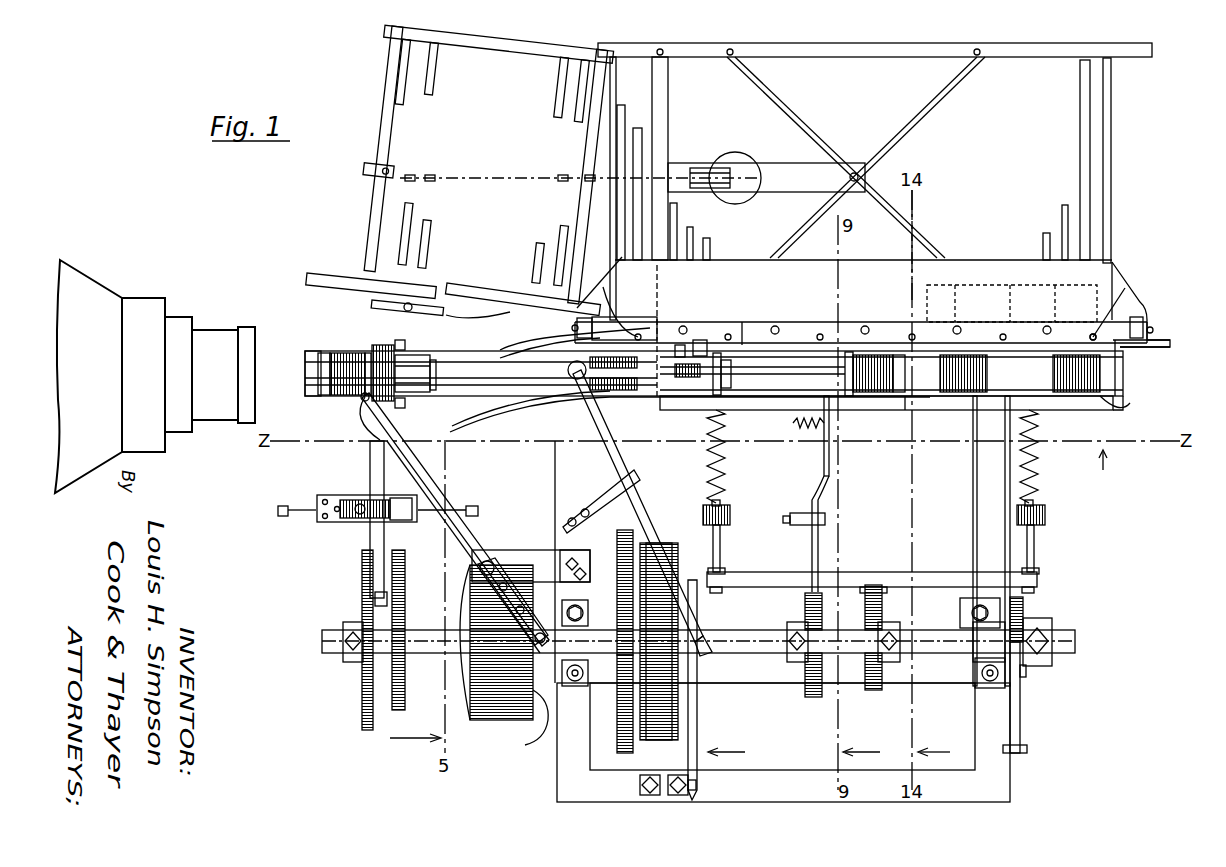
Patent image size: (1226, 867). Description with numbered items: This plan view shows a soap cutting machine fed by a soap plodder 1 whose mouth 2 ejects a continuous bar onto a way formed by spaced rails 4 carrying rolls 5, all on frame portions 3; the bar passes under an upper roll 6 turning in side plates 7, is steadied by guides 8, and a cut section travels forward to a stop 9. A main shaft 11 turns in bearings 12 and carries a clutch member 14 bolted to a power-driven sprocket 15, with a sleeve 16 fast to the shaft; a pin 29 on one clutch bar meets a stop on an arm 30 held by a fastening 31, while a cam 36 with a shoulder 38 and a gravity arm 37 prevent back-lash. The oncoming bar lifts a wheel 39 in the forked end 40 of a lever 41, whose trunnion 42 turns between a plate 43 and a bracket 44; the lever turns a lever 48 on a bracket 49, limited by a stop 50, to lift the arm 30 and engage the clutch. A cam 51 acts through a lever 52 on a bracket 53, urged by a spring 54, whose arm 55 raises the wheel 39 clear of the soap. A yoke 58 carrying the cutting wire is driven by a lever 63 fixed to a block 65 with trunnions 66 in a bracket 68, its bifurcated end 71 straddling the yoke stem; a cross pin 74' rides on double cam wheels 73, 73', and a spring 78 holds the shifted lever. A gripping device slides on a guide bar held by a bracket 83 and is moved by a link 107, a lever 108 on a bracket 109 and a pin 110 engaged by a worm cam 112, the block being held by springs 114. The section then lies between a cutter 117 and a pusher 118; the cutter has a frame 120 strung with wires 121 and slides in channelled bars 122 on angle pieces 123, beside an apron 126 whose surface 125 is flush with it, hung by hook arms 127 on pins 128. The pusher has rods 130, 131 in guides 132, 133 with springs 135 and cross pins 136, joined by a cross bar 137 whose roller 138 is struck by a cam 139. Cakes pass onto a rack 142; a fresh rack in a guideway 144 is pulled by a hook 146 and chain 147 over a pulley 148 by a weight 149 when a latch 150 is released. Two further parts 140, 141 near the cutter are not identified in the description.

The soap plodder 1 is at (114, 292).
The mouth of the plodder 2 is at (214, 370).
The frame portions 3 is at (580, 498).
The spaced rails 4 is at (460, 390).
The rolls 5 is at (482, 390).
The upper complementary roll 6 is at (345, 380).
The side-supporting plates 7 is at (323, 350).
The guides 8 is at (530, 398).
The stop 9 is at (1118, 368).
The main shaft 11 is at (745, 650).
The bearings 12 is at (574, 688).
The cylindrical clutch member 14 is at (660, 740).
The power-driven sprocket 15 is at (612, 738).
The sleeve 16 is at (705, 656).
The pin 29 is at (712, 640).
The arm 30 is at (698, 720).
The fastening 31 is at (700, 784).
The cam 36 is at (1025, 608).
The arm 37 is at (1020, 718).
The shoulder 38 is at (1028, 674).
The rotary contact or wheel 39 is at (898, 395).
The forked end 40 is at (848, 352).
The lever 41 is at (790, 365).
The trunnion 42 is at (712, 385).
The plate 43 is at (700, 340).
The supporting bracket 44 is at (730, 390).
The lever 48 is at (612, 455).
The bracket 49 is at (620, 530).
The stop 50 is at (535, 728).
The cam 51 is at (812, 698).
The lever 52 is at (815, 585).
The bracket 53 is at (810, 478).
The spring 54 is at (792, 423).
The arm 55 is at (830, 464).
The yoke 58 is at (380, 345).
The lever 63 is at (378, 476).
The block 65 is at (400, 522).
The trunnions 66 is at (345, 520).
The bracket 68 is at (322, 522).
The bifurcated end 71 is at (425, 405).
The cam wheel 73 is at (351, 641).
The cam wheel 73' is at (409, 639).
The cross pin 74' is at (352, 596).
The spring 78 is at (360, 516).
The bracket 83 is at (678, 343).
The link 107 is at (363, 405).
The lever 108 is at (437, 470).
The bracket 109 is at (515, 552).
The pin 110 is at (545, 625).
The worm cam 112 is at (496, 642).
The springs 114 is at (398, 352).
The cutter 117 is at (861, 320).
The pusher 118 is at (935, 400).
The rectangular frame 120 is at (1012, 312).
The wires 121 is at (608, 290).
The channelled bars 122 is at (577, 327).
The angle pieces 123 is at (853, 335).
The surface 125 is at (896, 245).
The apron 126 is at (1015, 254).
The hook-forming arms 127 is at (1125, 297).
The pins 128 is at (1183, 332).
The rod 130 is at (720, 535).
The rod 131 is at (1035, 535).
The guide 132 is at (706, 440).
The guide 133 is at (891, 515).
The spring 135 is at (728, 470).
The cross pin 136 is at (898, 495).
The cross bar 137 is at (935, 578).
The roller 138 is at (885, 605).
The cam 139 is at (872, 690).
The bracket 140 is at (1156, 300).
The wire 141 is at (864, 306).
The rack 142 is at (383, 138).
The guideway 144 is at (380, 28).
The hook 146 is at (373, 186).
The chain 147 is at (440, 172).
The pulley 148 is at (733, 172).
The weight 149 is at (745, 198).
The latch 150 is at (452, 312).